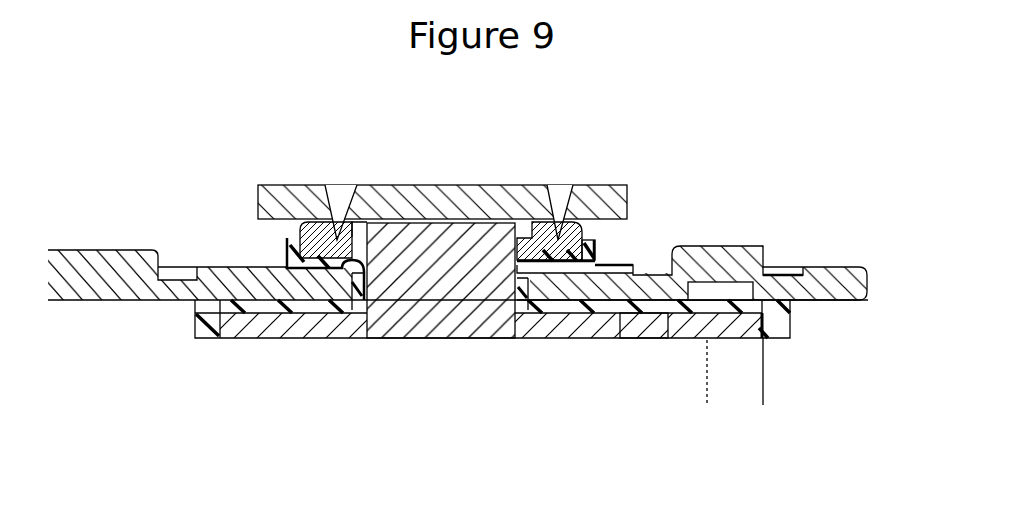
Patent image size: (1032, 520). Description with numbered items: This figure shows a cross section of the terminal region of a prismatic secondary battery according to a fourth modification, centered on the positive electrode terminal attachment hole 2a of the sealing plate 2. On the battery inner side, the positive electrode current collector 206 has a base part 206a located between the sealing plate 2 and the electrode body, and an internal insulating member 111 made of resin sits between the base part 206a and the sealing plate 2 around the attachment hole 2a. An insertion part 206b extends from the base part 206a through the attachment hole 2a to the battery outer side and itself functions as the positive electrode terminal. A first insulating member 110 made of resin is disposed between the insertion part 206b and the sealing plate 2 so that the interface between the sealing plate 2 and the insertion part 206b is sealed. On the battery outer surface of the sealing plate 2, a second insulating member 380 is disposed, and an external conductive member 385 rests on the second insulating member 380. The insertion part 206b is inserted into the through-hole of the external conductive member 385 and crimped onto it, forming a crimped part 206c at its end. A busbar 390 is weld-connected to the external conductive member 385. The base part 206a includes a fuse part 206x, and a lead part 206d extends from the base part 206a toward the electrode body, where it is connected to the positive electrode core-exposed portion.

The sealing plate 2 is at (827, 285).
The positive electrode terminal attachment hole 2a is at (318, 312).
The first insulating member 110 is at (366, 318).
The internal insulating member 111 is at (258, 307).
The positive electrode current collector 206 is at (437, 340).
The base part 206a is at (583, 335).
The insertion part 206b is at (420, 287).
The crimped part 206c is at (362, 222).
The lead part 206d is at (737, 382).
The fuse part 206x is at (640, 335).
The second insulating member 380 is at (286, 312).
The external conductive member 385 is at (335, 240).
The busbar 390 is at (466, 200).